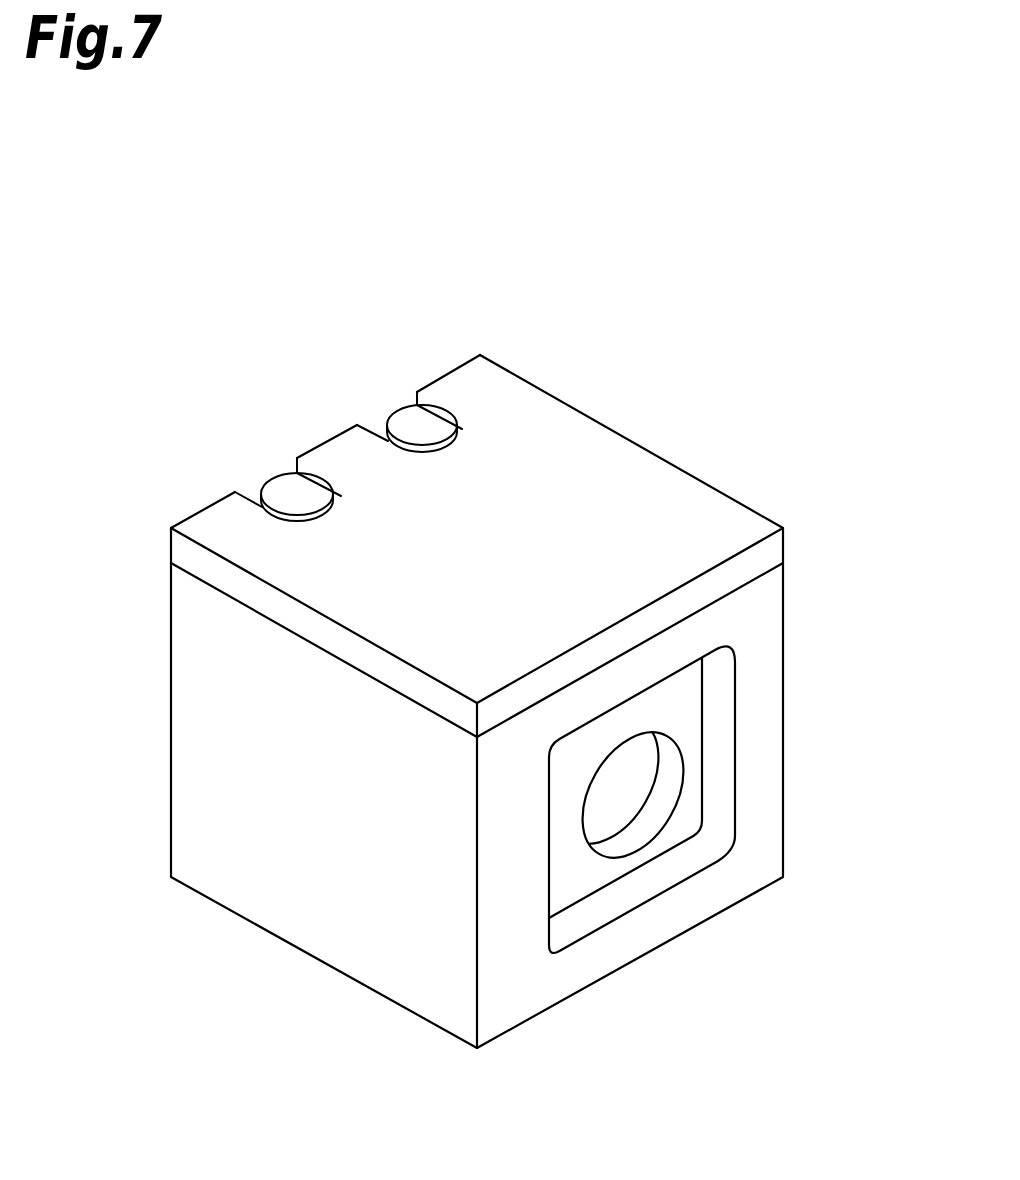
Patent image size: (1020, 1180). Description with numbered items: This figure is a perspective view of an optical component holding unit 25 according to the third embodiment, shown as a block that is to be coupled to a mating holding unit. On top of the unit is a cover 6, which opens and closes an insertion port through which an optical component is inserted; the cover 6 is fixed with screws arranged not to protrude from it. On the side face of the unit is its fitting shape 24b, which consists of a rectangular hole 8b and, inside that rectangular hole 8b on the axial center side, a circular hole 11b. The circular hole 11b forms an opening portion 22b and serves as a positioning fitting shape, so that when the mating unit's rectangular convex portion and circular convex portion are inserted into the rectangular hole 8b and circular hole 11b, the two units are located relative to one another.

The optical component holding unit 25 is at (240, 253).
The cover 6 is at (588, 503).
The opening portion 22b is at (613, 757).
The rectangular hole 8b is at (593, 913).
The circular hole 11b is at (655, 805).
The fitting shape 24b is at (813, 1060).